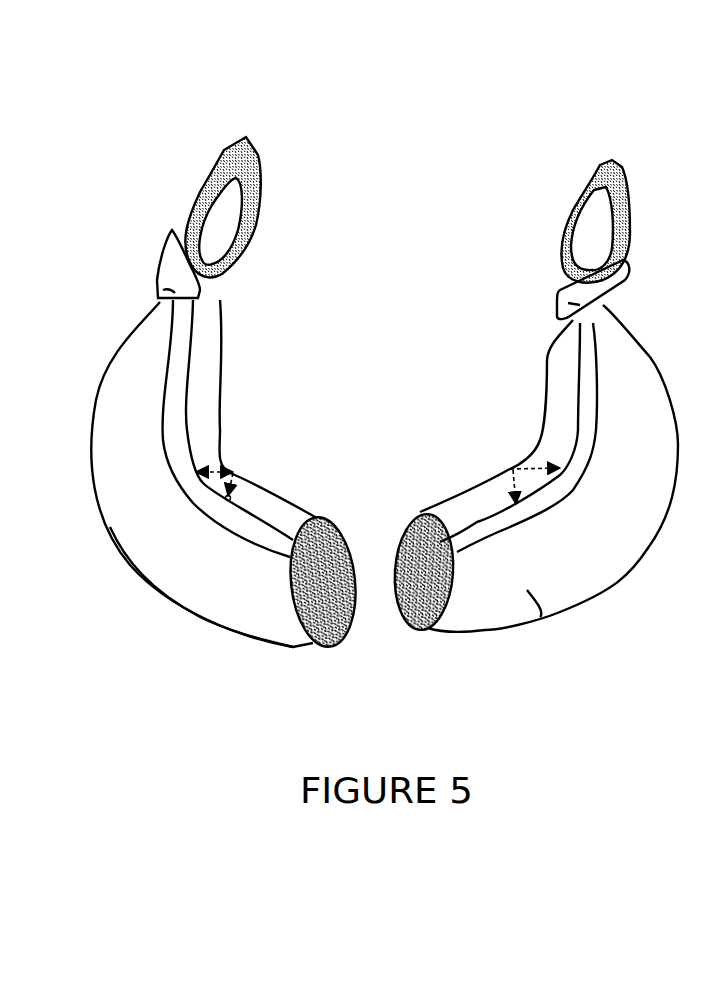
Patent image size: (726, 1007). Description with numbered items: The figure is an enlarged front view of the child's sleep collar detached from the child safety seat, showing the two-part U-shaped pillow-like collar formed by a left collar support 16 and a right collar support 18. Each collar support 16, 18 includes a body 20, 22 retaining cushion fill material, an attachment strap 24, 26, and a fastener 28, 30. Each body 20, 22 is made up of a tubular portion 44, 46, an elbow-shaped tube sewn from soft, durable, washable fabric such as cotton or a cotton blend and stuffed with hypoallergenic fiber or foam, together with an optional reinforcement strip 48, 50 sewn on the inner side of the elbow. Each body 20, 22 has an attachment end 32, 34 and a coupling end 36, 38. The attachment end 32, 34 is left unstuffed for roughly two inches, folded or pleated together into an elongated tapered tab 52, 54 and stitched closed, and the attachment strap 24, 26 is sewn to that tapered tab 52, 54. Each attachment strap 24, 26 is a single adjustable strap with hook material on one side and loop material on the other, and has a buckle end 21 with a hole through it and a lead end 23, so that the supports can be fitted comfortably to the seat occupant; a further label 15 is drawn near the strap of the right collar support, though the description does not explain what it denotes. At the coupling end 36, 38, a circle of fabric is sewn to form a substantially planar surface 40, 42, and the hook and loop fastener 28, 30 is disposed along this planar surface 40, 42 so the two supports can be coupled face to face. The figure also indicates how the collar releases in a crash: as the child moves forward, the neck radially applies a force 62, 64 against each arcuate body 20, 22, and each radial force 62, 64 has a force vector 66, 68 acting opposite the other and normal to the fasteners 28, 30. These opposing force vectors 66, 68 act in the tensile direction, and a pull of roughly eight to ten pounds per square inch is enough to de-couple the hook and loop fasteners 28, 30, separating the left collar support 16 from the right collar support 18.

The loop end portion 15 is at (628, 160).
The left collar support 16 is at (640, 310).
The right collar support 18 is at (100, 333).
The body 20 is at (603, 537).
The buckle end 21 is at (607, 157).
The body 22 is at (180, 560).
The lead end 23 is at (587, 200).
The attachment strap 24 is at (630, 200).
The attachment strap 26 is at (200, 197).
The fastener 28 is at (422, 630).
The fastener 30 is at (327, 647).
The attachment end 32 is at (547, 323).
The attachment end 34 is at (213, 298).
The coupling end 36 is at (402, 503).
The coupling end 38 is at (321, 515).
The planar surface 40 is at (392, 586).
The planar surface 42 is at (343, 605).
The tubular portion 44 is at (527, 590).
The tubular portion 46 is at (227, 590).
The reinforcement strip 48 is at (575, 460).
The reinforcement strip 50 is at (173, 407).
The tapered tab 52 is at (573, 307).
The tapered tab 54 is at (160, 270).
The radial force 62 is at (508, 468).
The radial force 64 is at (236, 470).
The force vector 66 is at (520, 463).
The force vector 68 is at (228, 458).